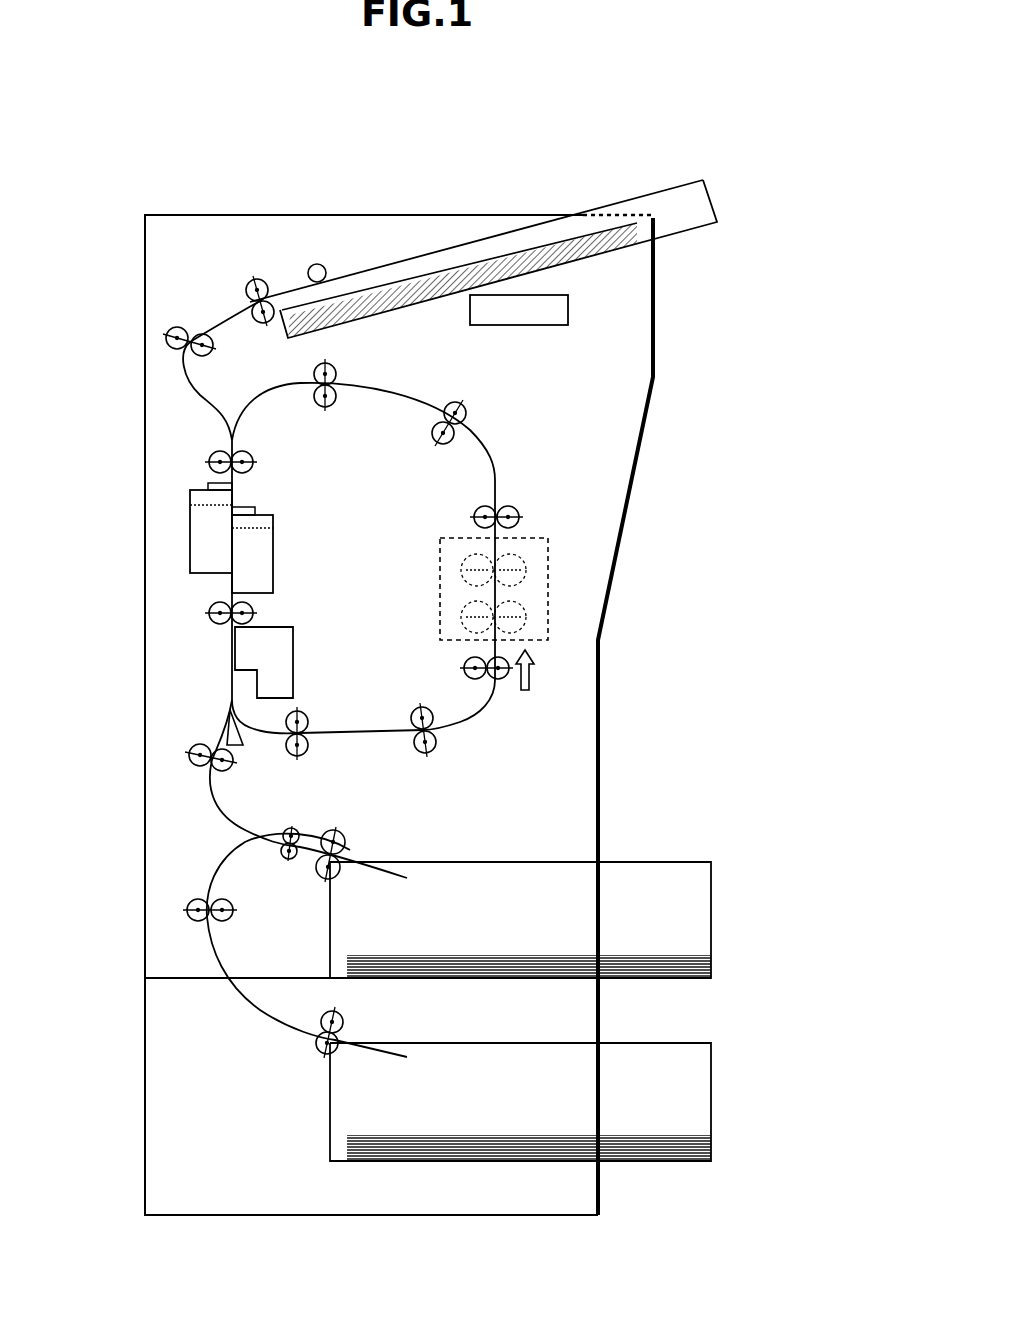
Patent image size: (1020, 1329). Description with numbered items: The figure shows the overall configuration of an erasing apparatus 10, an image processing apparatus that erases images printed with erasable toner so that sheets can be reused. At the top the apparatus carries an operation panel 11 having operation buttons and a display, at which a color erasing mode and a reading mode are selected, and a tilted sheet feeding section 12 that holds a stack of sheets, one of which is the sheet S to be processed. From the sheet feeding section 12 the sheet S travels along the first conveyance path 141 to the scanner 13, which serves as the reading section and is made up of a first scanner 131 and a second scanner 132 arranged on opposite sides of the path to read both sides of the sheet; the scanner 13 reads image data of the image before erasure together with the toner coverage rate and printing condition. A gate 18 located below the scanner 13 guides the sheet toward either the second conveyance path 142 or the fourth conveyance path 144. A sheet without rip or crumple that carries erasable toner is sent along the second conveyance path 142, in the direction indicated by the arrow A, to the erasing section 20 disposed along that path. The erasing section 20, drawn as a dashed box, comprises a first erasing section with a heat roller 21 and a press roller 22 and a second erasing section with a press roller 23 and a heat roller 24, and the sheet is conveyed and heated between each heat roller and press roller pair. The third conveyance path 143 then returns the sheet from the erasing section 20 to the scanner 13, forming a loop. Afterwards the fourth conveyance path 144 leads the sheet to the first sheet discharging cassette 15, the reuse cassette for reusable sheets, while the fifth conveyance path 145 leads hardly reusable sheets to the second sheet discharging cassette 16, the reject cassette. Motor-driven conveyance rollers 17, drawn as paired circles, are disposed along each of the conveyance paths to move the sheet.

The erasing apparatus 10 is at (302, 190).
The operation panel 11 is at (569, 310).
The sheet feeding section 12 is at (468, 232).
The sheet S is at (371, 268).
The scanner 13 is at (211, 590).
The first scanner 131 is at (190, 512).
The second scanner 132 is at (276, 566).
The first conveyance path 141 is at (185, 382).
The second conveyance path 142 is at (366, 740).
The third conveyance path 143 is at (368, 410).
The fourth conveyance path 144 is at (222, 812).
The fifth conveyance path 145 is at (228, 1000).
The first sheet discharging cassette 15 is at (713, 918).
The second sheet discharging cassette 16 is at (713, 1098).
The conveyance rollers 17 is at (333, 368).
The gate 18 is at (250, 608).
The erasing section 20 is at (529, 589).
The heat roller 21 is at (450, 615).
The press roller 22 is at (522, 616).
The press roller 23 is at (448, 568).
The heat roller 24 is at (522, 570).
The arrow A is at (536, 672).